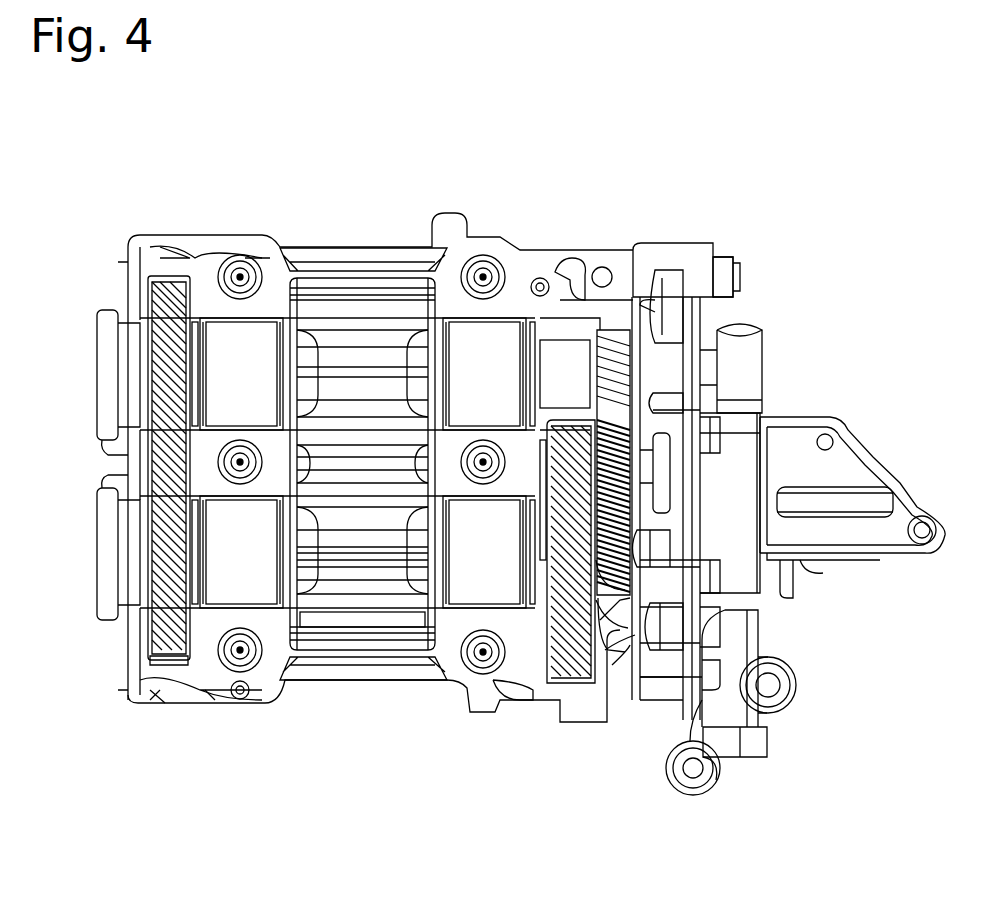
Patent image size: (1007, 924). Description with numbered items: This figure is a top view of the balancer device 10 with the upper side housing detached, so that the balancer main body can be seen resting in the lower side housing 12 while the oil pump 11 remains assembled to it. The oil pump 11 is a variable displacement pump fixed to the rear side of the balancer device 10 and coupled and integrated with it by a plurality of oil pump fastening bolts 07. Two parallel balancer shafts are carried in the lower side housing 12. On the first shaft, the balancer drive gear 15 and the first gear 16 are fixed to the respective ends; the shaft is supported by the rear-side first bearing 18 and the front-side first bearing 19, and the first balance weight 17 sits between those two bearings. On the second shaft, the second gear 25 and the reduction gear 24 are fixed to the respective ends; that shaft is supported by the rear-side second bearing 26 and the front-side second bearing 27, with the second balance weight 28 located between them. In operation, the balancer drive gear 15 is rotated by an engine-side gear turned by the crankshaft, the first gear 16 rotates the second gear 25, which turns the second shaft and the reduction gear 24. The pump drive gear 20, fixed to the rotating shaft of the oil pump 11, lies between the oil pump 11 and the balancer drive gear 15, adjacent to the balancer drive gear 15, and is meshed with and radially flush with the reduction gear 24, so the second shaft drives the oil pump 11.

The oil pump fastening bolt 07 is at (735, 272).
The balancer device 10 is at (706, 246).
The oil pump 11 is at (843, 420).
The lower side housing 12 is at (135, 705).
The balancer drive gear 15 is at (570, 683).
The first gear 16 is at (172, 660).
The first balance weight 17 is at (358, 612).
The rear-side first bearing 18 is at (258, 593).
The front-side first bearing 19 is at (468, 590).
The pump drive gear 20 is at (620, 598).
The reduction gear 24 is at (612, 330).
The second gear 25 is at (172, 278).
The rear-side second bearing 26 is at (262, 340).
The front-side second bearing 27 is at (502, 340).
The second balance weight 28 is at (375, 312).